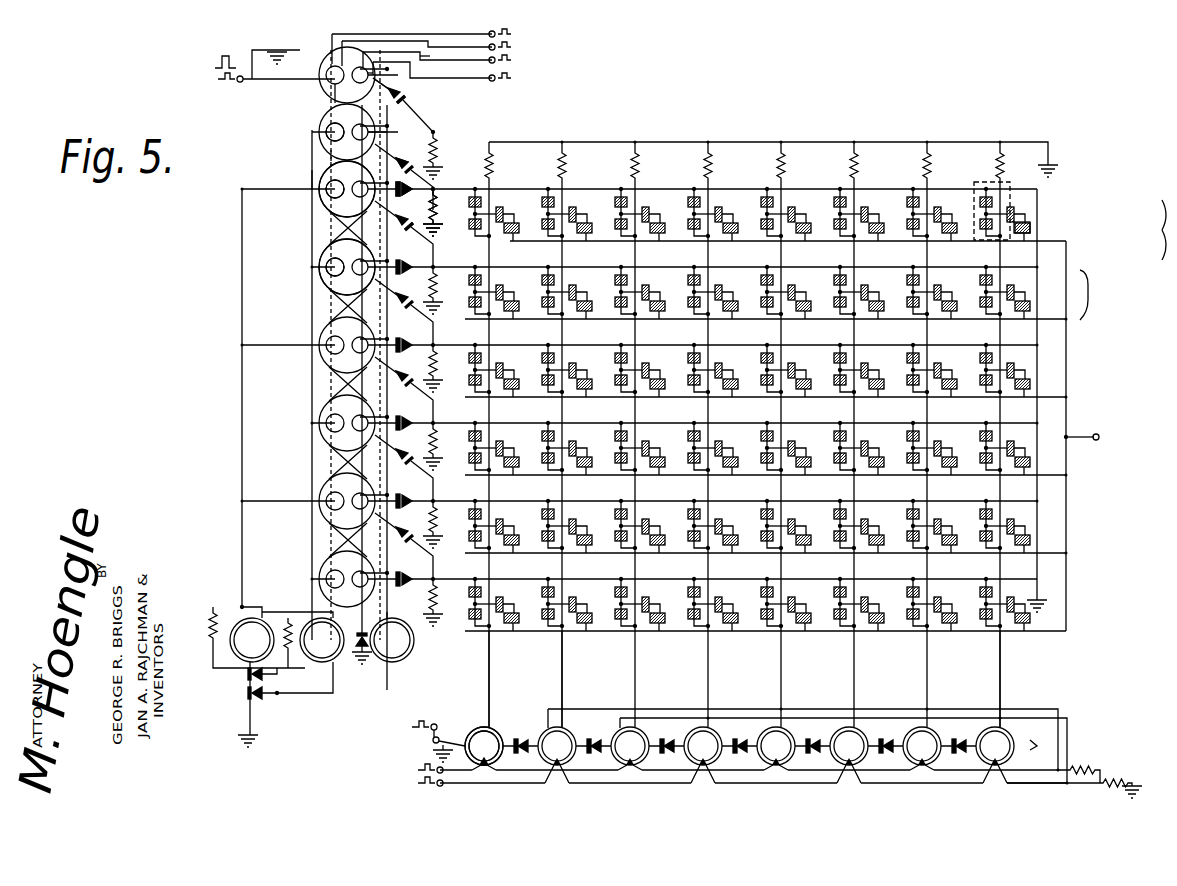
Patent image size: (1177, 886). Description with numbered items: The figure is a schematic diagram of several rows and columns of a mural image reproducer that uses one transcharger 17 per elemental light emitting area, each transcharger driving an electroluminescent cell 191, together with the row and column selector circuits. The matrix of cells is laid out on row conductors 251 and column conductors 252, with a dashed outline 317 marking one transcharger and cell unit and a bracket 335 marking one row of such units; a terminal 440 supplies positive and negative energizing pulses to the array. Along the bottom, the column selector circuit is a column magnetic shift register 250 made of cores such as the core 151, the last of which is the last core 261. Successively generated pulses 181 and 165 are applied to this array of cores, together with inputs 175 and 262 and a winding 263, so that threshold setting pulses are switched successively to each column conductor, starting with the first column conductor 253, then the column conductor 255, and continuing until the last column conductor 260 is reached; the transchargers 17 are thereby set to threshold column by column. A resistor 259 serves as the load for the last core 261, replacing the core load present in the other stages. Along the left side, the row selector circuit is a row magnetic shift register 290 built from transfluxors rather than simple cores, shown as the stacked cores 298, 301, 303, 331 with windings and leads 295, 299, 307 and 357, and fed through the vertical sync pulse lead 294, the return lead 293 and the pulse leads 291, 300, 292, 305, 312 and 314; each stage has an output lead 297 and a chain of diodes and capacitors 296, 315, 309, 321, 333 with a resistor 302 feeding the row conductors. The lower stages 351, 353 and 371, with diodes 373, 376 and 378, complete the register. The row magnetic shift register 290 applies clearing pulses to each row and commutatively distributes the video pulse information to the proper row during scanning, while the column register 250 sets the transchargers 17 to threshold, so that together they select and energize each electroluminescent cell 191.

The transcharger 17 is at (1071, 202).
The electroluminescent cell 191 is at (1030, 228).
The magnetic core 151 is at (495, 729).
The pulse 165 is at (400, 785).
The pulse input terminal 175 is at (426, 718).
The pulse 181 is at (400, 772).
The column magnetic shift register 250 is at (401, 751).
The row conductors 251 is at (499, 128).
The column conductors 252 is at (582, 128).
The first column conductor 253 is at (489, 672).
The column conductor 255 is at (562, 672).
The resistor 259 is at (1030, 740).
The last column conductor 260 is at (1000, 678).
The last core 261 is at (1037, 767).
The input terminal 262 is at (440, 733).
The core winding 263 is at (490, 765).
The row magnetic shift register 290 is at (330, 150).
The row scan advance pulse V1 291 is at (567, 45).
The row scan advance pulse V2 292 is at (578, 60).
The ground return lead 293 is at (332, 45).
The vertical sync pulse lead 294 is at (325, 66).
The core winding 295 is at (335, 90).
The diode 296 is at (378, 96).
The core output lead 297 is at (370, 137).
The magnetic core 298 is at (326, 127).
The lead 299 is at (295, 178).
The V2 pulse lead 300 is at (439, 52).
The magnetic core 301 is at (326, 198).
The resistor 302 is at (436, 200).
The core winding 303 is at (322, 212).
The sampled video pulse lead 305 is at (370, 68).
The winding lead 307 is at (330, 145).
The diode 309 is at (390, 160).
The sampled video pulse 312 is at (568, 74).
The lead 314 is at (432, 44).
The capacitor 315 is at (405, 98).
The transcharger cell unit 317 is at (1150, 235).
The capacitor 321 is at (407, 182).
The magnetic core 331 is at (322, 283).
The capacitor 333 is at (405, 237).
The row of transchargers 335 is at (1100, 295).
The magnetic core 351 is at (265, 618).
The magnetic core 353 is at (335, 658).
The core winding 357 is at (326, 262).
The magnetic core 371 is at (414, 648).
The diode 373 is at (371, 633).
The diode 376 is at (244, 676).
The diode 378 is at (256, 705).
The energizing pulse terminal 440 is at (1098, 434).